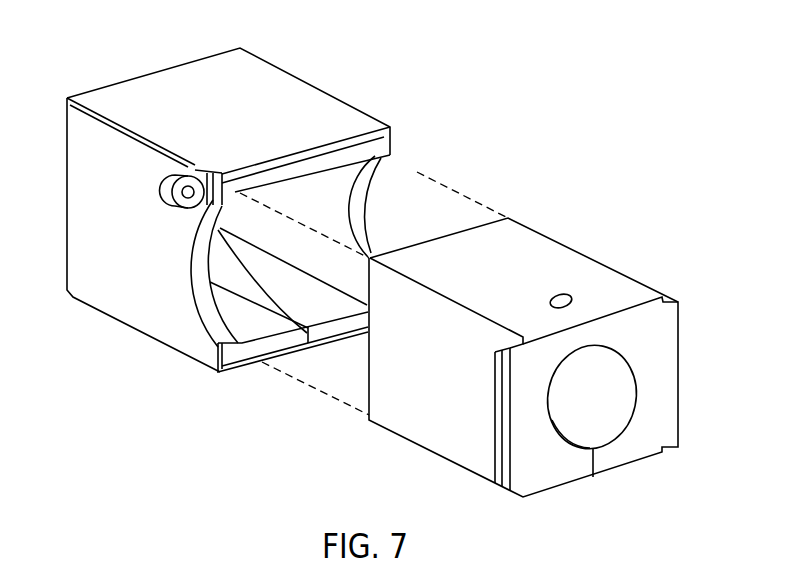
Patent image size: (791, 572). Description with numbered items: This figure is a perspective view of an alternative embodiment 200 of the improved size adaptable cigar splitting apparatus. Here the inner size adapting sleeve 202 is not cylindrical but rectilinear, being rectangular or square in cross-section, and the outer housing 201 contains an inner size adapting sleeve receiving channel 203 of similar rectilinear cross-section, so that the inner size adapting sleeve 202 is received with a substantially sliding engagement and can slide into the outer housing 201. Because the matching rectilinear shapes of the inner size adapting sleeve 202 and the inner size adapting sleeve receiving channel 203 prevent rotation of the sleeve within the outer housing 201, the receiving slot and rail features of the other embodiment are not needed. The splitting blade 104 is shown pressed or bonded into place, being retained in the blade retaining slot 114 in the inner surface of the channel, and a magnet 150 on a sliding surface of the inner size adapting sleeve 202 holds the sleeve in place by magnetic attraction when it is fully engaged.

The alternative embodiment of the size adaptable cigar splitting apparatus 200 is at (108, 452).
The outer housing 201 is at (247, 83).
The inner size adapting sleeve 202 is at (520, 248).
The inner size adapting sleeve receiving channel 203 is at (318, 212).
The splitting blade 104 is at (227, 267).
The blade retaining slot 114 is at (282, 386).
The magnet 150 is at (572, 300).